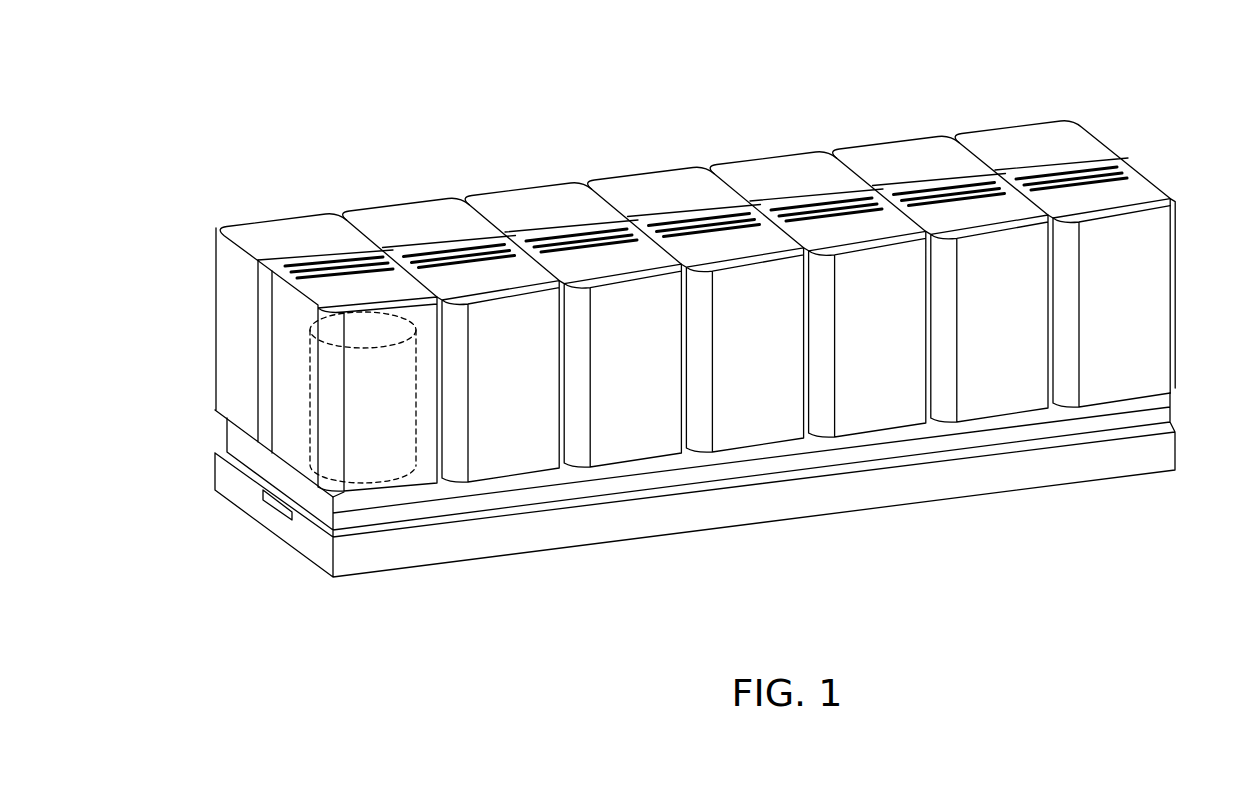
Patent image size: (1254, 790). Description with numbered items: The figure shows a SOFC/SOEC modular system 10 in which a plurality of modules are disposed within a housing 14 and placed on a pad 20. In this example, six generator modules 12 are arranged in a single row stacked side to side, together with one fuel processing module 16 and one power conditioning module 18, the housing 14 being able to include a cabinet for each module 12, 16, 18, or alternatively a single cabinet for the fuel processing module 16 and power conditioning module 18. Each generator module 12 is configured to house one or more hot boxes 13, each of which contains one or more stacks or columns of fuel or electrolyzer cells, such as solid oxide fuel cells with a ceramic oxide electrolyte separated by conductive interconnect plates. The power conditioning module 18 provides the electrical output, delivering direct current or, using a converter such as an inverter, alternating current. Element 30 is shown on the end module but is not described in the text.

The SOFC/SOEC modular system 10 is at (518, 116).
The generator module 12 is at (288, 220).
The hot box 13 is at (310, 383).
The housing 14 is at (1064, 91).
The fuel processing module 16 is at (1140, 190).
The power conditioning module 18 is at (1020, 135).
The pad 20 is at (411, 567).
The side wall 30 is at (1160, 250).